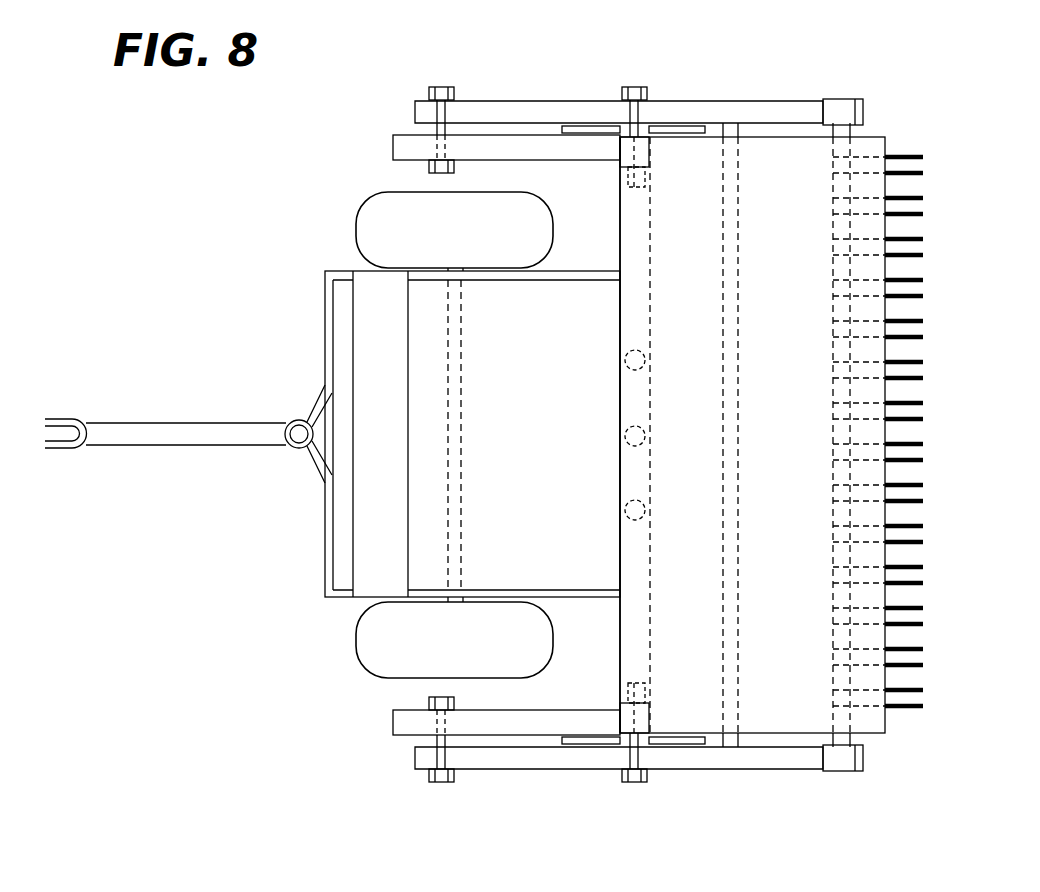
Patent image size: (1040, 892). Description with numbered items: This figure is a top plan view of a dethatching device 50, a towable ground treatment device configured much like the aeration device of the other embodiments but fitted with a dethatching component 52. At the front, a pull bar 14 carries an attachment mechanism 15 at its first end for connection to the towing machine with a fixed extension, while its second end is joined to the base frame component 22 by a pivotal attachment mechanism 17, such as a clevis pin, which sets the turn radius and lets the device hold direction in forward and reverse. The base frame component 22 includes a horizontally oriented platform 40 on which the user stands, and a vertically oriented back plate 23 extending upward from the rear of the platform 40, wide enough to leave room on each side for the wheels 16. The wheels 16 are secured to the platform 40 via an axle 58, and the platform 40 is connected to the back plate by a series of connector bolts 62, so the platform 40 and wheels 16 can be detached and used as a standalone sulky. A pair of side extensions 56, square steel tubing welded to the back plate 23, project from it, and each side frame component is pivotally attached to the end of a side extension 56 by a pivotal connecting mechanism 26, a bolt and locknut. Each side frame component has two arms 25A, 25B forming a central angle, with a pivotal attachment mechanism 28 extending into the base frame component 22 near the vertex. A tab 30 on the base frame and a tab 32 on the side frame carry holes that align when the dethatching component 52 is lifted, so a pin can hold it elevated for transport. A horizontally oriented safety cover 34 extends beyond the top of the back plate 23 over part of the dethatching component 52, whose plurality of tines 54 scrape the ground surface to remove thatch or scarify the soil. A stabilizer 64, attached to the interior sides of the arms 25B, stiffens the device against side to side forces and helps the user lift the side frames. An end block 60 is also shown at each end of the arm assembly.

The dethatching device 50 is at (166, 225).
The pull bar 14 is at (198, 430).
The attachment mechanism 15 is at (53, 420).
The wheels 16 is at (462, 237).
The pivotal attachment mechanism 17 is at (296, 420).
The base frame component 22 is at (325, 569).
The vertically oriented back plate 23 is at (620, 517).
The arm 25A is at (467, 101).
The arm 25B is at (806, 101).
The pivotal connecting mechanism 26 is at (441, 86).
The pivotal attachment mechanism 28 is at (641, 88).
The tab 30 is at (650, 150).
The tab 32 is at (632, 128).
The horizontally oriented safety cover 34 is at (700, 451).
The horizontally oriented platform 40 is at (520, 402).
The dethatching component 52 is at (907, 728).
The tines 54 is at (921, 463).
The side extensions 56 is at (553, 150).
The axle 58 is at (463, 500).
The end block 60 is at (856, 99).
The connector bolts 62 is at (643, 356).
The stabilizer 64 is at (738, 372).